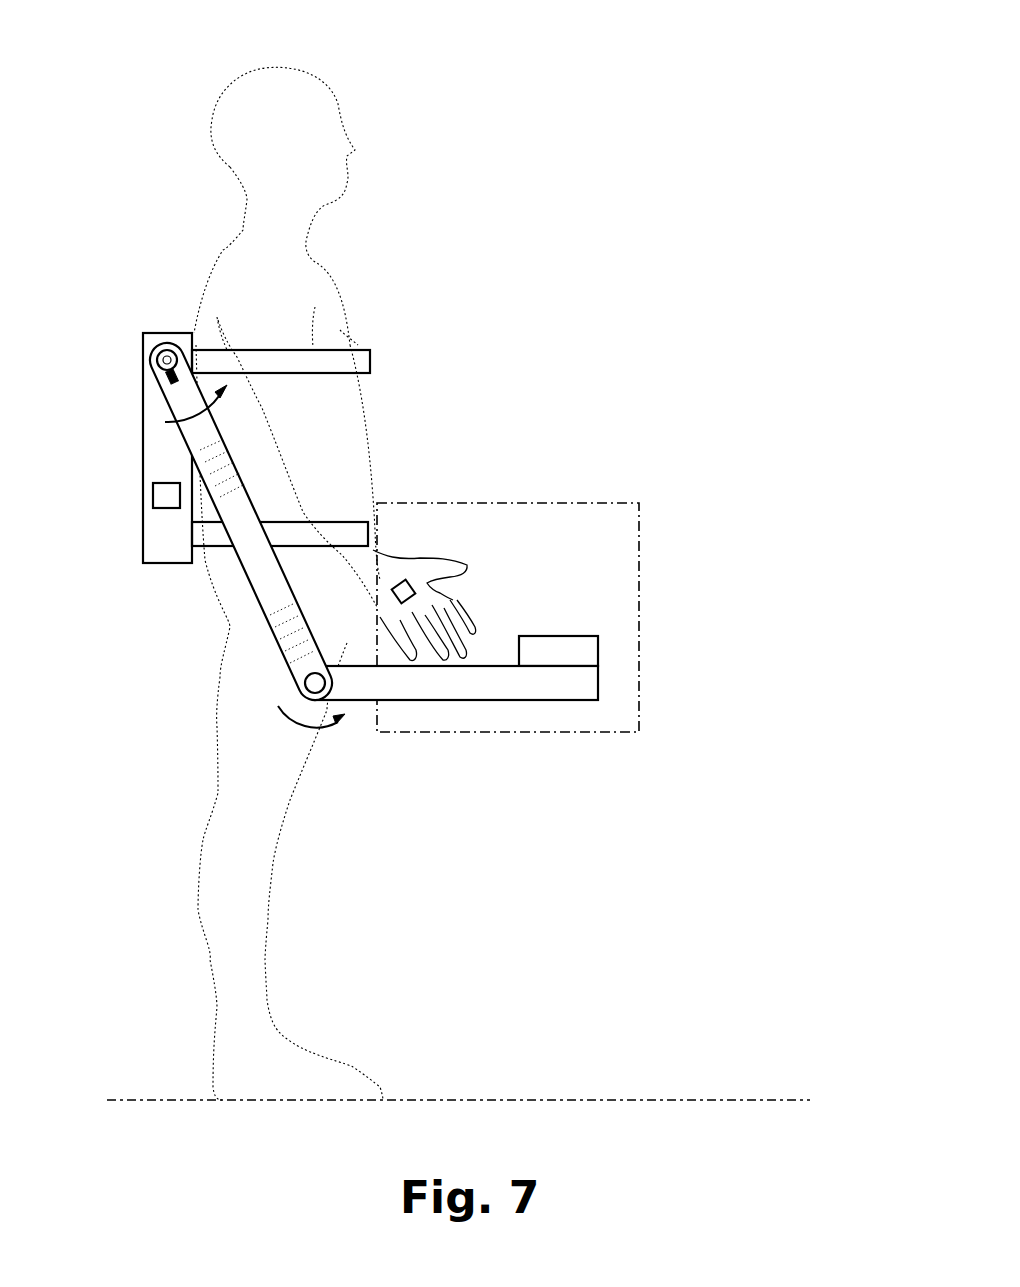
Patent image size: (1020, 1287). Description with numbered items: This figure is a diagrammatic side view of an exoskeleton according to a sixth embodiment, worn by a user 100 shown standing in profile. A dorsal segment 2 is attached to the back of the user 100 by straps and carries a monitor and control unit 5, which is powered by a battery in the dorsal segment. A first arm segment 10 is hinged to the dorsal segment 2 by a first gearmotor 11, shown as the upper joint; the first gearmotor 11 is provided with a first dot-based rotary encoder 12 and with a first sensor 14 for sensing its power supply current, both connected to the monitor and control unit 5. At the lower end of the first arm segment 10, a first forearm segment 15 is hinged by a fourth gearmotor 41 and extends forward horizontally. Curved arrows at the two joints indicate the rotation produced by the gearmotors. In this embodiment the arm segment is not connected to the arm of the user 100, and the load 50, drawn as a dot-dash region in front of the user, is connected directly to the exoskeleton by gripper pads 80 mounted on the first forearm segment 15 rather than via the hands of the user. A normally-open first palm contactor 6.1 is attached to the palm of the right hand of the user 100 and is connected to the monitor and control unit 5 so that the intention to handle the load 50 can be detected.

The user 100 is at (348, 78).
The dorsal segment 2 is at (162, 530).
The monitor and control unit 5 is at (153, 496).
The first arm segment 10 is at (277, 613).
The first gearmotor 11 is at (158, 355).
The first dot-based rotary encoder 12 is at (157, 362).
The first sensor 14 is at (162, 382).
The first forearm segment 15 is at (463, 692).
The fourth gearmotor 41 is at (310, 682).
The load 50 is at (620, 565).
The first palm contactor 6.1 is at (442, 590).
The gripper pads 80 is at (560, 646).